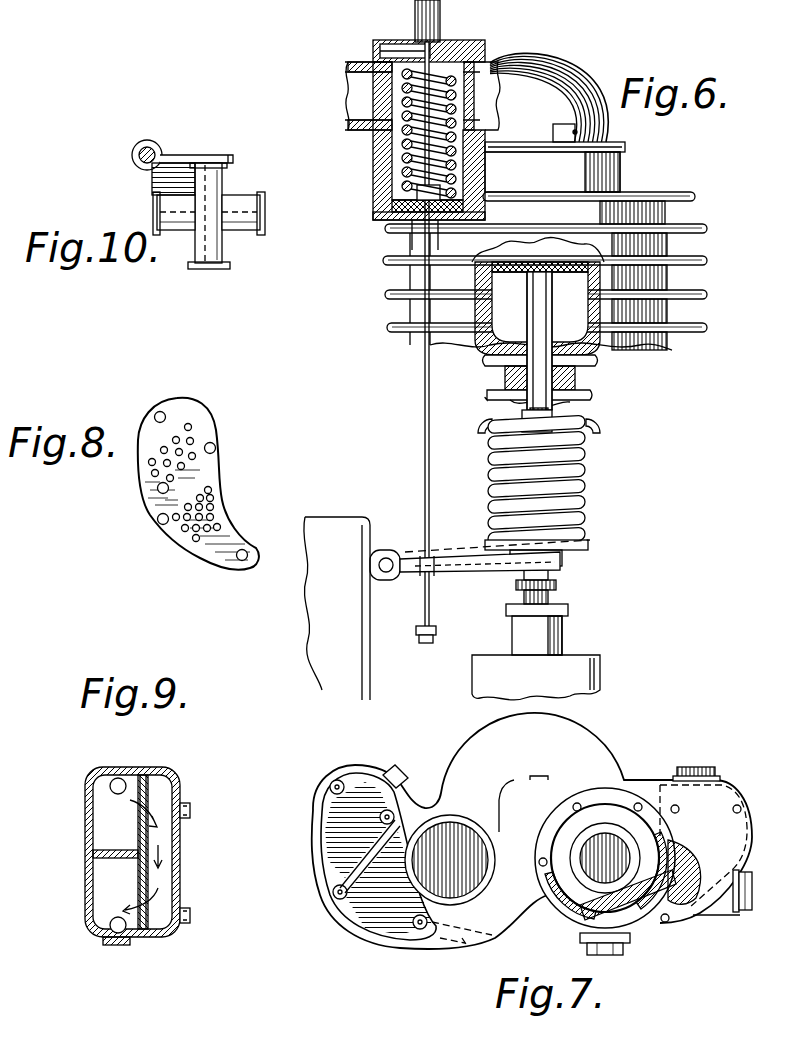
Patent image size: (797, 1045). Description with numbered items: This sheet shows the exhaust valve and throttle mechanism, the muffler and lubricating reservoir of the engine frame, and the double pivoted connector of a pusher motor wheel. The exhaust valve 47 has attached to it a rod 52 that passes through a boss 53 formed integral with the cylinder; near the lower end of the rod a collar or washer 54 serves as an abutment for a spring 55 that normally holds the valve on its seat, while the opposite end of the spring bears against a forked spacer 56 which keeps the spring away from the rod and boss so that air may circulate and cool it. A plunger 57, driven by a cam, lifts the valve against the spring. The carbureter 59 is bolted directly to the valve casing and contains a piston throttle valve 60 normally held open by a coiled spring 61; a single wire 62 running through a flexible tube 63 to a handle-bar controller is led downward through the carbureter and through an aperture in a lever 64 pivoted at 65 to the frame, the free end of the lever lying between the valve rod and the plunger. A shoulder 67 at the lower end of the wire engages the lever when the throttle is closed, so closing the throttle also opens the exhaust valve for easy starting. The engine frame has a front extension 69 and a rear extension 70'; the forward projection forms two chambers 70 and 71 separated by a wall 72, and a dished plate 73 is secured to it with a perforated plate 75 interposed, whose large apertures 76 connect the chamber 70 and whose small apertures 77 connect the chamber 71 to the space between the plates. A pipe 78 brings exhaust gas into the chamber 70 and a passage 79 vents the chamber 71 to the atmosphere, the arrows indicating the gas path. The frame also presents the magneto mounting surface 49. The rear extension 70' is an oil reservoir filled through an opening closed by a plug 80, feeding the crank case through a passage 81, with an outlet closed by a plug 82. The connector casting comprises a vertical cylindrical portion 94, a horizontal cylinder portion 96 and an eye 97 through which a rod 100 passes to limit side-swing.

In FIG. 6, the exhaust valve 47 is at (540, 276).
In FIG. 7, the surface 49 is at (450, 822).
In FIG. 6, the rod 52 is at (548, 384).
In FIG. 6, the boss 53 is at (568, 400).
In FIG. 6, the collar or washer 54 is at (590, 545).
In FIG. 6, the spring 55 is at (566, 478).
In FIG. 6, the forked spacer 56 is at (598, 432).
In FIG. 6, the plunger 57 is at (556, 600).
In FIG. 6, the carbureter 59 is at (522, 60).
In FIG. 6, the piston throttle valve 60 is at (480, 145).
In FIG. 6, the coiled spring 61 is at (402, 92).
In FIG. 6, the wire 62 is at (452, 62).
In FIG. 6, the flexible tube 63 is at (415, 22).
In FIG. 6, the lever 64 is at (486, 568).
In FIG. 6, the pivot 65 is at (388, 558).
In FIG. 6, the shoulder 67 is at (437, 631).
In FIG. 7, the front extension 69 is at (358, 778).
In FIG. 9, the chamber 70 is at (131, 817).
In FIG. 7, the chamber 70 is at (378, 857).
In FIG. 7, the rear extension 70' is at (703, 846).
In FIG. 9, the chamber 71 is at (131, 879).
In FIG. 7, the chamber 71 is at (395, 918).
In FIG. 9, the wall 72 is at (93, 854).
In FIG. 7, the wall 72 is at (352, 866).
In FIG. 9, the plate 73 is at (176, 792).
In FIG. 8, the plate 75 is at (146, 503).
In FIG. 9, the plate 75 is at (146, 775).
In FIG. 8, the apertures 76 is at (182, 450).
In FIG. 8, the apertures 77 is at (216, 518).
In FIG. 9, the apertures 77 is at (148, 905).
In FIG. 9, the pipe 78 is at (118, 770).
In FIG. 7, the pipe 78 is at (400, 778).
In FIG. 9, the passage 79 is at (113, 945).
In FIG. 7, the passage 79 is at (441, 945).
In FIG. 7, the plug 80 is at (698, 768).
In FIG. 7, the passage 81 is at (583, 935).
In FIG. 7, the plug 82 is at (748, 912).
In FIG. 10, the vertical cylindrical portion 94 is at (208, 250).
In FIG. 10, the horizontal cylinder portion 96 is at (265, 228).
In FIG. 10, the eye 97 is at (165, 160).
In FIG. 10, the rod 100 is at (132, 156).